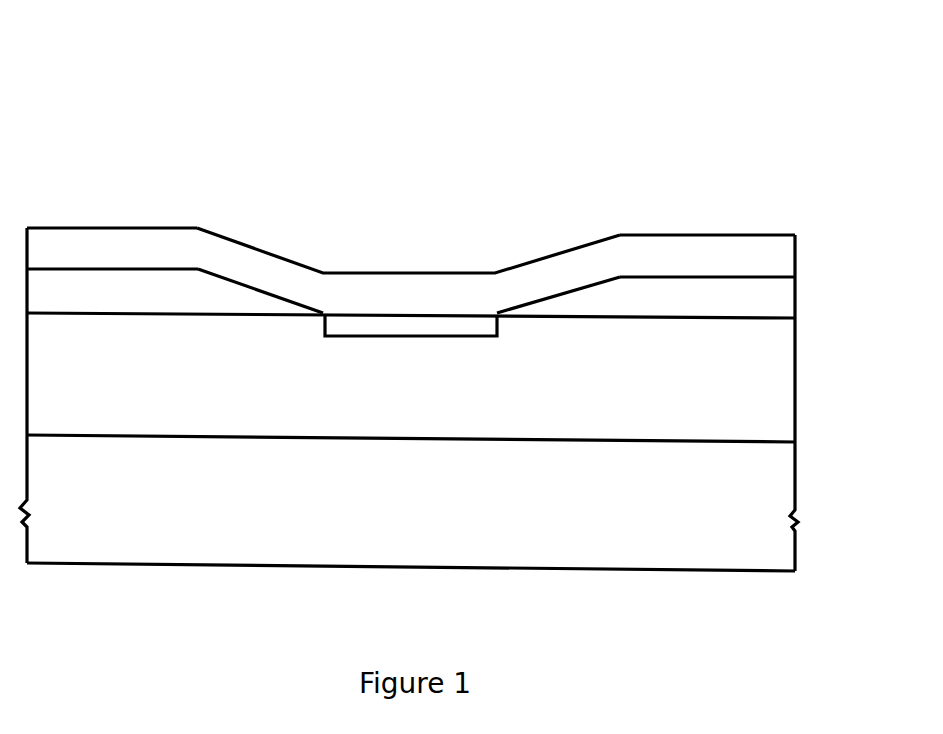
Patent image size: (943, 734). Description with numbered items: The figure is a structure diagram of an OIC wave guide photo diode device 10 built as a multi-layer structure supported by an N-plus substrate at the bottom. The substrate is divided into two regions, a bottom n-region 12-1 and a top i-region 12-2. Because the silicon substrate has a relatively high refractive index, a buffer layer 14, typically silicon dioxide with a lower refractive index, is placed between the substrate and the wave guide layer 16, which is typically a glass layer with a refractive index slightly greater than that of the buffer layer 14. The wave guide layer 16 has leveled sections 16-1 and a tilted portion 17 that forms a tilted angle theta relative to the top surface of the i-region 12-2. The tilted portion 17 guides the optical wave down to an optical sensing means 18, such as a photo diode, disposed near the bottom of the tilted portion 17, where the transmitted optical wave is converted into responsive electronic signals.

The OIC wave guide photo diode device 10 is at (537, 86).
The bottom n-region 12-1 is at (773, 502).
The top i-region 12-2 is at (772, 409).
The buffer layer 14 is at (777, 311).
The wave guide layer 16 is at (777, 263).
The leveled section 16-1 is at (157, 227).
The tilted portion 17 is at (291, 262).
The optical sensing means 18 is at (468, 326).